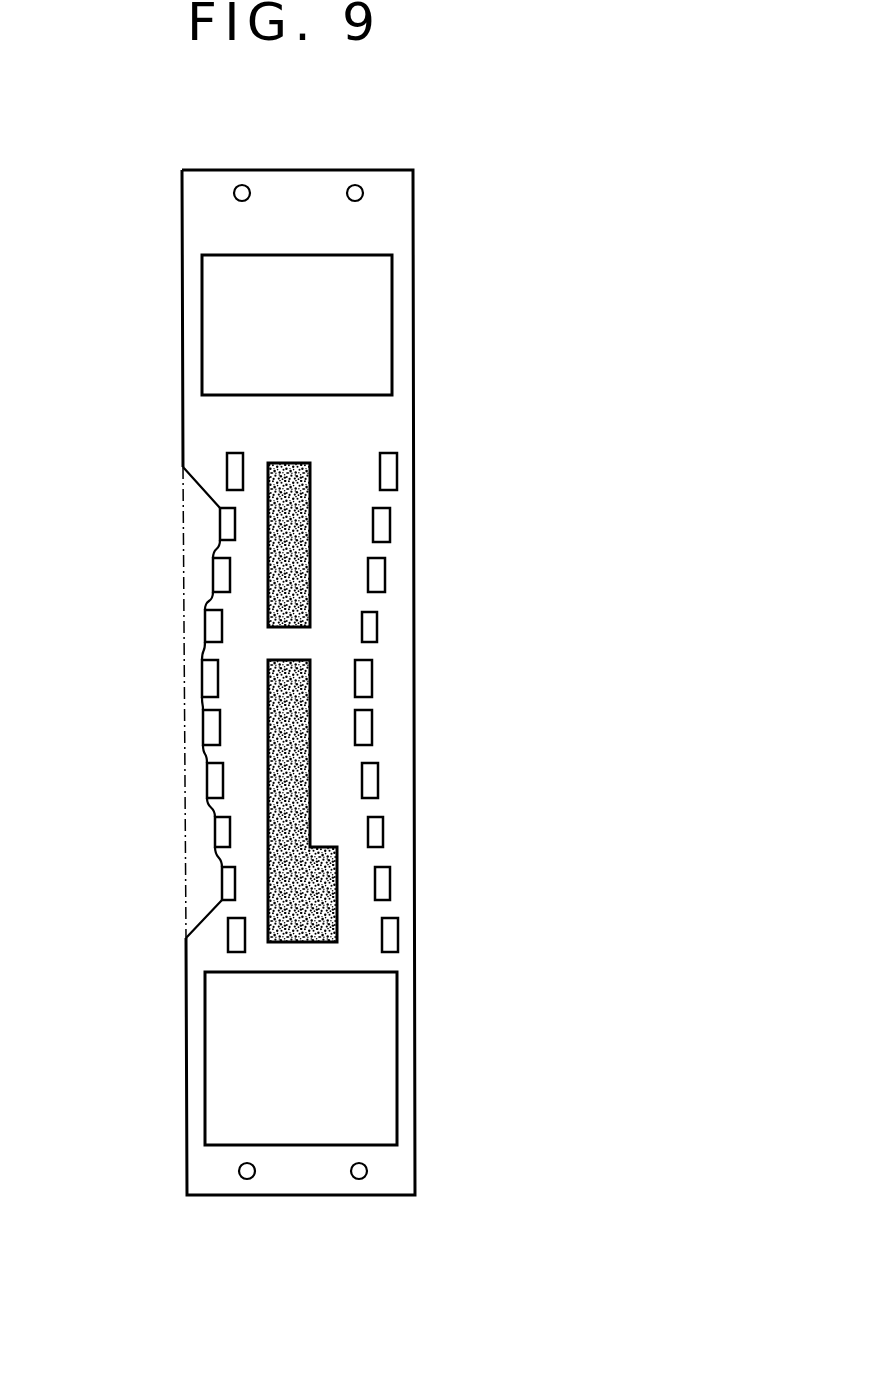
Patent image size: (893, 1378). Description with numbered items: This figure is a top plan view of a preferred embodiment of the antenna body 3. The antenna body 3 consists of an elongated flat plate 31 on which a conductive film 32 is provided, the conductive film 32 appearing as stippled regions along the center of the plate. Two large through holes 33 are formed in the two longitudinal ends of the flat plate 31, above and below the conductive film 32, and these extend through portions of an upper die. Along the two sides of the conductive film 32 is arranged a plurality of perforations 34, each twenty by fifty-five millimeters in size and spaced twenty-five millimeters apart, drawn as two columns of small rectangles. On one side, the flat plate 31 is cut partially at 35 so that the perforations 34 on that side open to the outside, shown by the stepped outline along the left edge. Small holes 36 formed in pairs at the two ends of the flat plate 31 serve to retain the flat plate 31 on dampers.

The antenna body 3 is at (378, 682).
The flat plate 31 is at (402, 782).
The conductive film 32 is at (268, 522).
The through holes 33 is at (370, 333).
The perforations 34 is at (220, 577).
The partial cut 35 is at (183, 665).
The small holes 36 is at (349, 188).